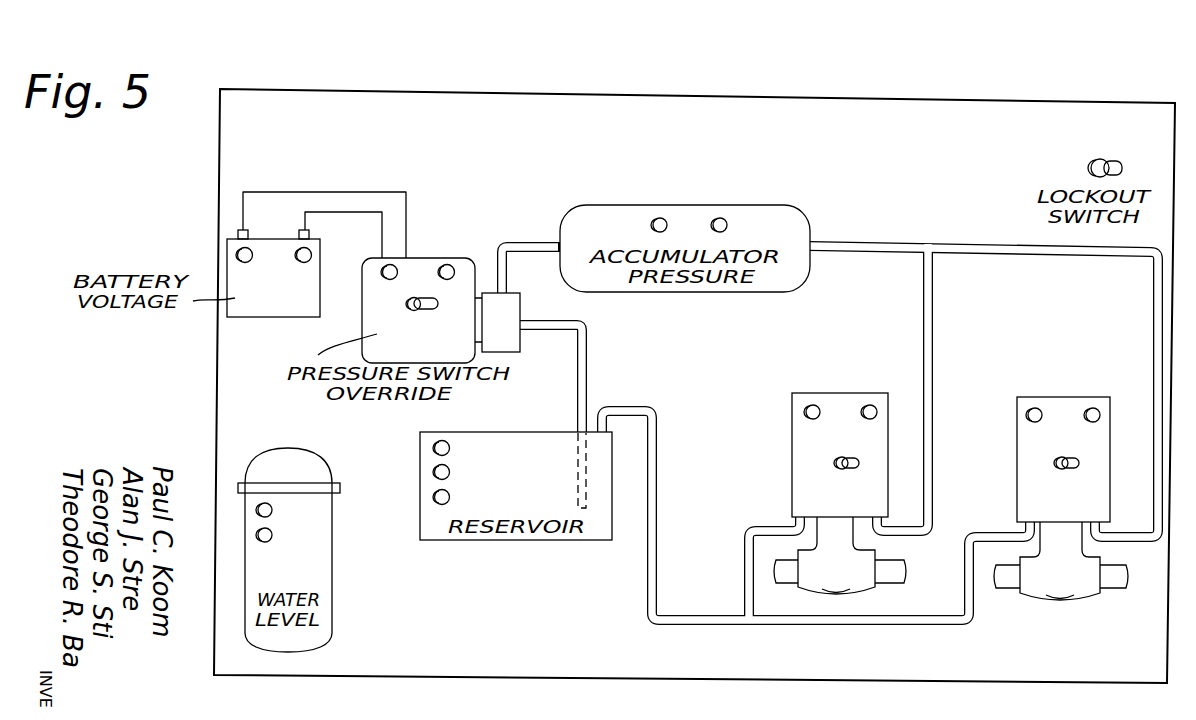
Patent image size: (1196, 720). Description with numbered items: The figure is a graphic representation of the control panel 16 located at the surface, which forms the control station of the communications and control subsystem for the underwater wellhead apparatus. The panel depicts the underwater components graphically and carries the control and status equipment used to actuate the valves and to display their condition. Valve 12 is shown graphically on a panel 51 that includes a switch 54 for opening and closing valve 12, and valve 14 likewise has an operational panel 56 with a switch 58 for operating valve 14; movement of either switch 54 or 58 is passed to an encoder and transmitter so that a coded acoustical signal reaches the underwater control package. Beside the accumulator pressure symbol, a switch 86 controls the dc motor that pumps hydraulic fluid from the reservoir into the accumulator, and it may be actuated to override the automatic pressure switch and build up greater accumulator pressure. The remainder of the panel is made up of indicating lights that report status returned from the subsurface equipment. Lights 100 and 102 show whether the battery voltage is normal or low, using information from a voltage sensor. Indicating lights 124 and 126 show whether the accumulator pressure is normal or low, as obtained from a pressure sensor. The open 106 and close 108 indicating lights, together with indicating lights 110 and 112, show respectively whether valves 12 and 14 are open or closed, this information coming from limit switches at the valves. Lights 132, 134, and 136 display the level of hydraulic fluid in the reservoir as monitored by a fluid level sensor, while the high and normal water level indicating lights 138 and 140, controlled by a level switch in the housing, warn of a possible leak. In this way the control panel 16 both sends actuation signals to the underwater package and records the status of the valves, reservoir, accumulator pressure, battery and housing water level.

The control panel 16 is at (526, 92).
The switch 86 is at (423, 297).
The light 100 is at (245, 263).
The light 102 is at (303, 263).
The indicating light 124 is at (658, 218).
The indicating light 126 is at (722, 218).
The open indicating light 106 is at (815, 405).
The close indicating light 108 is at (872, 405).
The indicating light 110 is at (1037, 408).
The indicating light 112 is at (1095, 408).
The panel 51 is at (792, 440).
The operational panel 56 is at (1017, 437).
The switch 54 is at (848, 470).
The switch 58 is at (1070, 470).
The valve 12 is at (800, 486).
The valve 14 is at (1037, 503).
The light 132 is at (435, 446).
The light 134 is at (435, 471).
The light 136 is at (435, 496).
The high water level indicating light 138 is at (273, 512).
The normal water level indicating light 140 is at (273, 537).